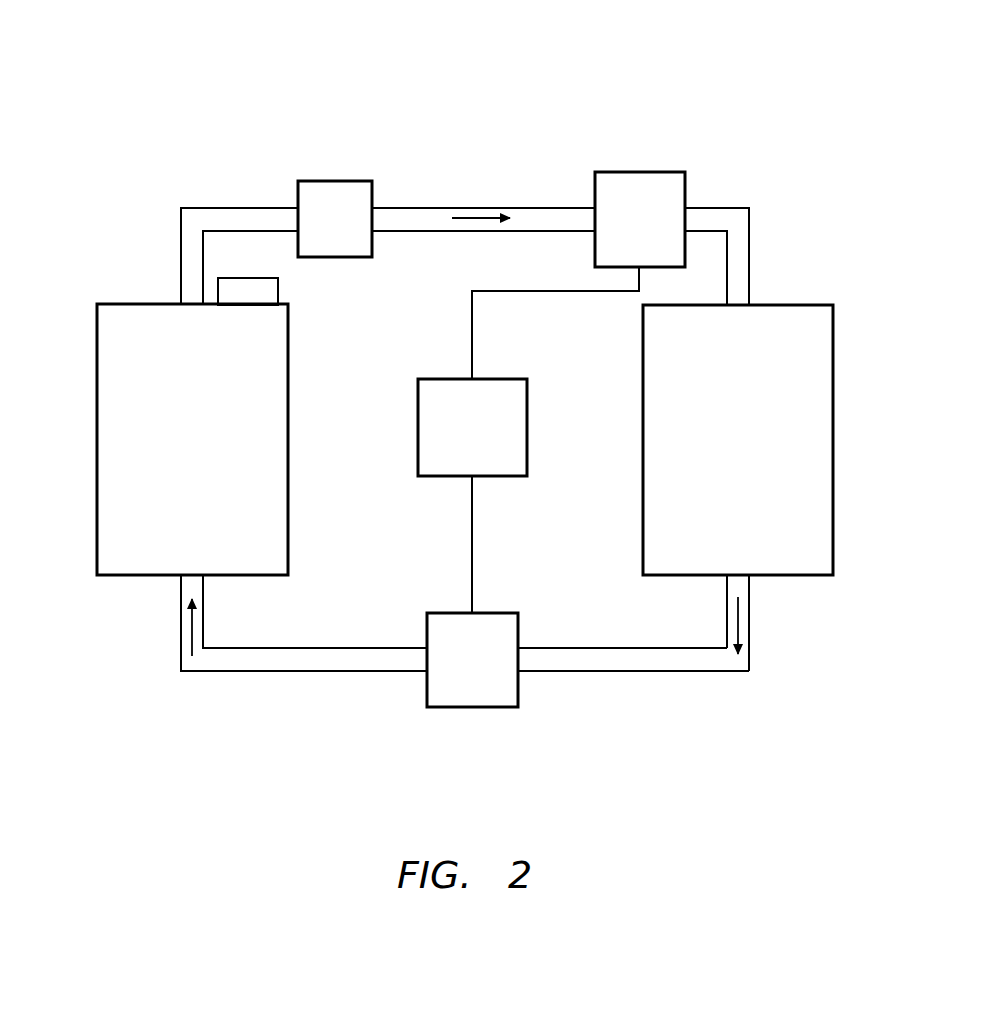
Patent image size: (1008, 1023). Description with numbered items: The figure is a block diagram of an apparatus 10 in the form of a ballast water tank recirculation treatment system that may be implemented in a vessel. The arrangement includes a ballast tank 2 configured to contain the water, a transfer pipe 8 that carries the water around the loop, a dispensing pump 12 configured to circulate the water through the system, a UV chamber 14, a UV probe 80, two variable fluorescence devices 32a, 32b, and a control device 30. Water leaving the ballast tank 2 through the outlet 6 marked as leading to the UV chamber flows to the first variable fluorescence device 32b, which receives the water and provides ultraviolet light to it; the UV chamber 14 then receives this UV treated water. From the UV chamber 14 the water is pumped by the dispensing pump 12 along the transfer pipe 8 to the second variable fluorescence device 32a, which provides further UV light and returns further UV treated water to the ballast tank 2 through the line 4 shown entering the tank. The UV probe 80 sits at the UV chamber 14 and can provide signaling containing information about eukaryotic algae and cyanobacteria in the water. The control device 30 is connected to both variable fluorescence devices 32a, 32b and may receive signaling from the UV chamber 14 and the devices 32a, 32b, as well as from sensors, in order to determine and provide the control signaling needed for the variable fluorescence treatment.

The apparatus 10 is at (107, 51).
The ballast tank 2 is at (835, 391).
The pipe from valve to ballast tank 4 is at (737, 302).
The outlet pipe to UV chamber 6 is at (737, 577).
The transfer pipe 8 is at (538, 207).
The dispensing pump 12 is at (330, 181).
The UV chamber 14 is at (97, 378).
The control device 30 is at (528, 429).
The second variable fluorescence device 32a is at (647, 172).
The first variable fluorescence device 32b is at (427, 693).
The UV probe 80 is at (247, 278).